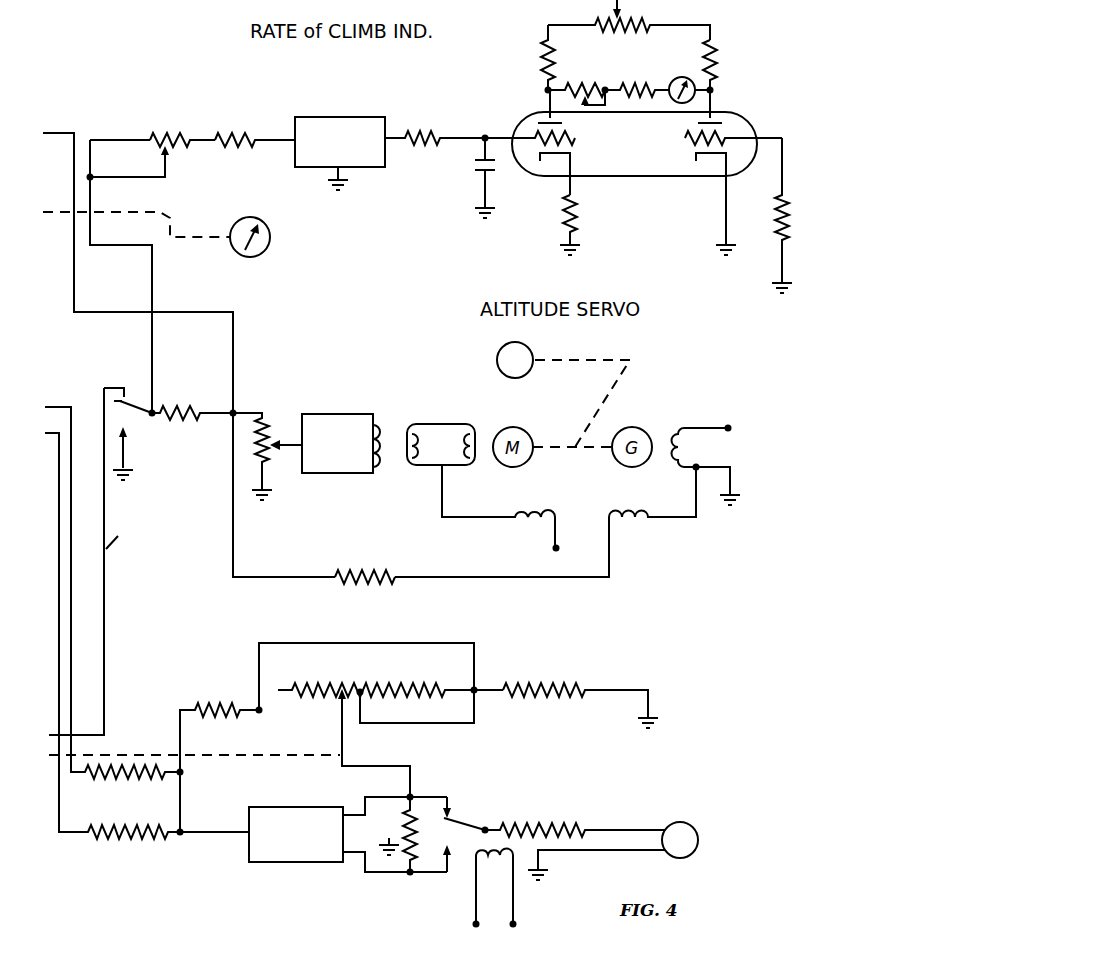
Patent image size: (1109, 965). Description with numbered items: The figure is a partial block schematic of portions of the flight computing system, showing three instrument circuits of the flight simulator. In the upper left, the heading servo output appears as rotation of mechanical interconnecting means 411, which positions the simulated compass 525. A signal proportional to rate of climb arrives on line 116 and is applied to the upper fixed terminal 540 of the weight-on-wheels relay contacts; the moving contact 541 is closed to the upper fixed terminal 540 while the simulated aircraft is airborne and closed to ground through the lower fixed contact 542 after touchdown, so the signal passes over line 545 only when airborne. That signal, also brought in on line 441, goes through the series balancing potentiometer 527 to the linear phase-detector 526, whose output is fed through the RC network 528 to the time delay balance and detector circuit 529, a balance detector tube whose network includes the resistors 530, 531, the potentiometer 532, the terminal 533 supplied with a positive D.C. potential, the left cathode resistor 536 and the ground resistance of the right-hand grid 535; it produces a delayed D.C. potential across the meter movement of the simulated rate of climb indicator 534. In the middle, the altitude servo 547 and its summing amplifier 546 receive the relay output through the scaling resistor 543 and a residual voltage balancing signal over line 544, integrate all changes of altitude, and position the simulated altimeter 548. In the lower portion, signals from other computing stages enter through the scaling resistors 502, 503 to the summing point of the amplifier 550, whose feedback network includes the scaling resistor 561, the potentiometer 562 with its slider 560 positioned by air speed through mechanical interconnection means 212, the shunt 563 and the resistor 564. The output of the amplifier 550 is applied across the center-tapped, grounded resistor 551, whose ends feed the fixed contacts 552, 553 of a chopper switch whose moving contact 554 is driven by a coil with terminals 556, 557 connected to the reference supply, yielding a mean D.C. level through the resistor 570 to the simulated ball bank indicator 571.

The conductor 441 is at (66, 133).
The line 545 is at (130, 245).
The series balancing potentiometer 527 is at (158, 136).
The linear phase-detector 526 is at (360, 120).
The mechanical interconnecting means 411 is at (157, 212).
The simulated compass 525 is at (271, 242).
The RC network 528 is at (430, 150).
The time delay balance and detector circuit 529 is at (772, 112).
The resistor 530 is at (541, 60).
The potentiometer 532 is at (634, 24).
The resistor 531 is at (717, 62).
The terminal 533 is at (608, 94).
The simulated rate of climb indicator 534 is at (673, 80).
The left cathode resistor 536 is at (577, 226).
The ground resistance of the right-hand grid 535 is at (789, 221).
The line 544 is at (226, 311).
The line 116 is at (106, 673).
The upper fixed terminal 540 is at (127, 395).
The moving contact 541 is at (127, 414).
The lower fixed contact 542 is at (128, 441).
The scaling resistor 543 is at (202, 414).
The summing amplifier 546 is at (344, 414).
The simulated altimeter 548 is at (497, 360).
The altitude servo 547 is at (635, 394).
The scaling resistor 502 is at (152, 780).
The scaling resistor 503 is at (152, 840).
The mechanical interconnection means 212 is at (155, 755).
The scaling resistor 561 is at (229, 714).
The potentiometer 562 is at (379, 688).
The shunt 563 is at (379, 722).
The slider 560 is at (338, 703).
The resistor 564 is at (530, 688).
The amplifier 550 is at (336, 862).
The center-tapped, grounded resistor 551 is at (403, 837).
The fixed contact 552 is at (456, 811).
The fixed contact 553 is at (456, 868).
The moving contact 554 is at (467, 825).
The resistor 570 is at (527, 826).
The simulated ball bank indicator 571 is at (696, 828).
The coil terminal 556 is at (474, 928).
The coil terminal 557 is at (516, 928).